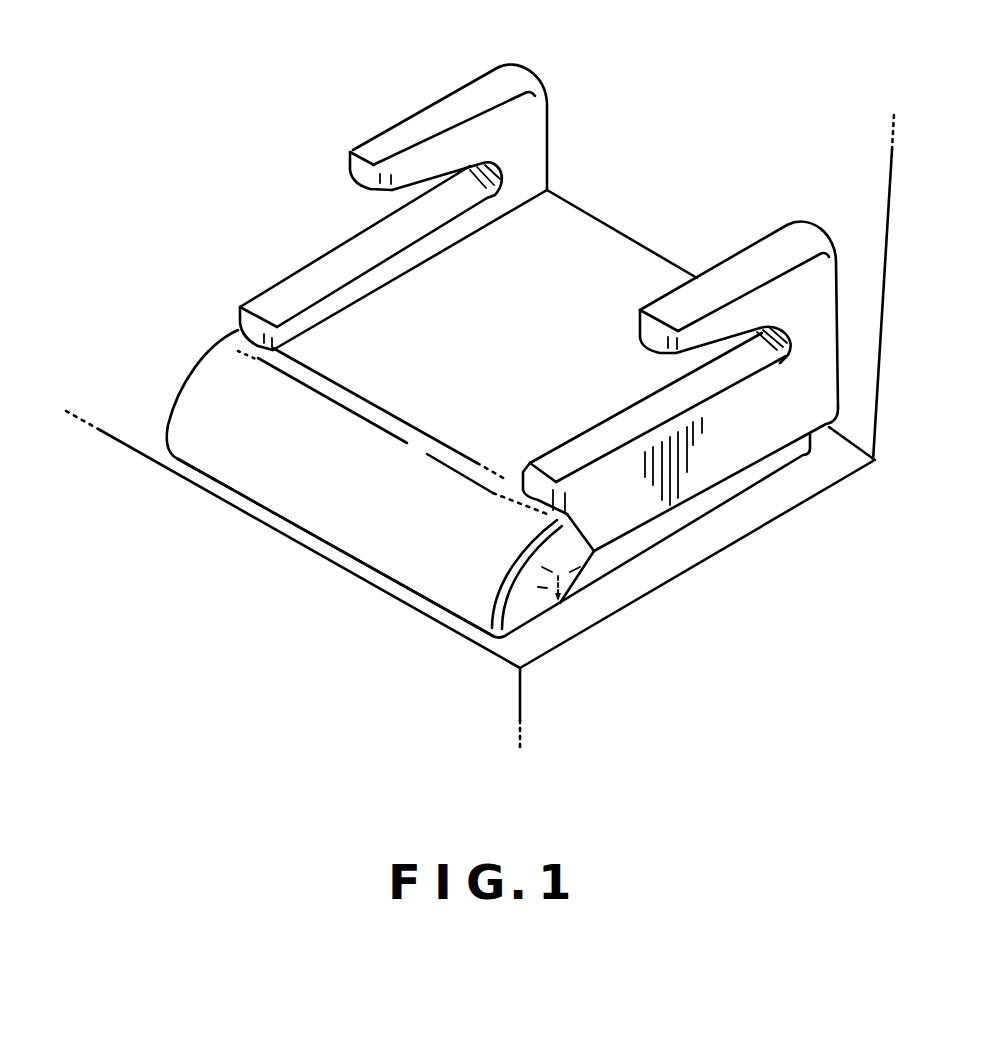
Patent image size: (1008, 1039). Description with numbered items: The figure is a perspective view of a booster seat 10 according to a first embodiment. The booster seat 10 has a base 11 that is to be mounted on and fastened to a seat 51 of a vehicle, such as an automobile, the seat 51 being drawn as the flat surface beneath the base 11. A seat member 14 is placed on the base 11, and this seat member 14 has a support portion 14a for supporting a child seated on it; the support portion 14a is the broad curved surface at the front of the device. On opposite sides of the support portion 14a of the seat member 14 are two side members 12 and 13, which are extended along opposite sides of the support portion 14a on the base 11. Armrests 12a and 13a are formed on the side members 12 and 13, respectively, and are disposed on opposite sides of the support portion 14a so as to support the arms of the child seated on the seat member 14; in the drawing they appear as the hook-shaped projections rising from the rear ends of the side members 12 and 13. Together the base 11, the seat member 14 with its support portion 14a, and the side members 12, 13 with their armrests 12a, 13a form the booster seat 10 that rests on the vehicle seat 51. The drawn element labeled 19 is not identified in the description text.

The booster seat 10 is at (483, 339).
The base 11 is at (694, 514).
The side member 12 is at (318, 252).
The armrest 12a is at (440, 106).
The side member 13 is at (749, 442).
The armrest 13a is at (764, 246).
The seat member 14 is at (177, 378).
The support portion 14a is at (426, 448).
The lower edge 19 is at (275, 490).
The seat 51 is at (621, 590).